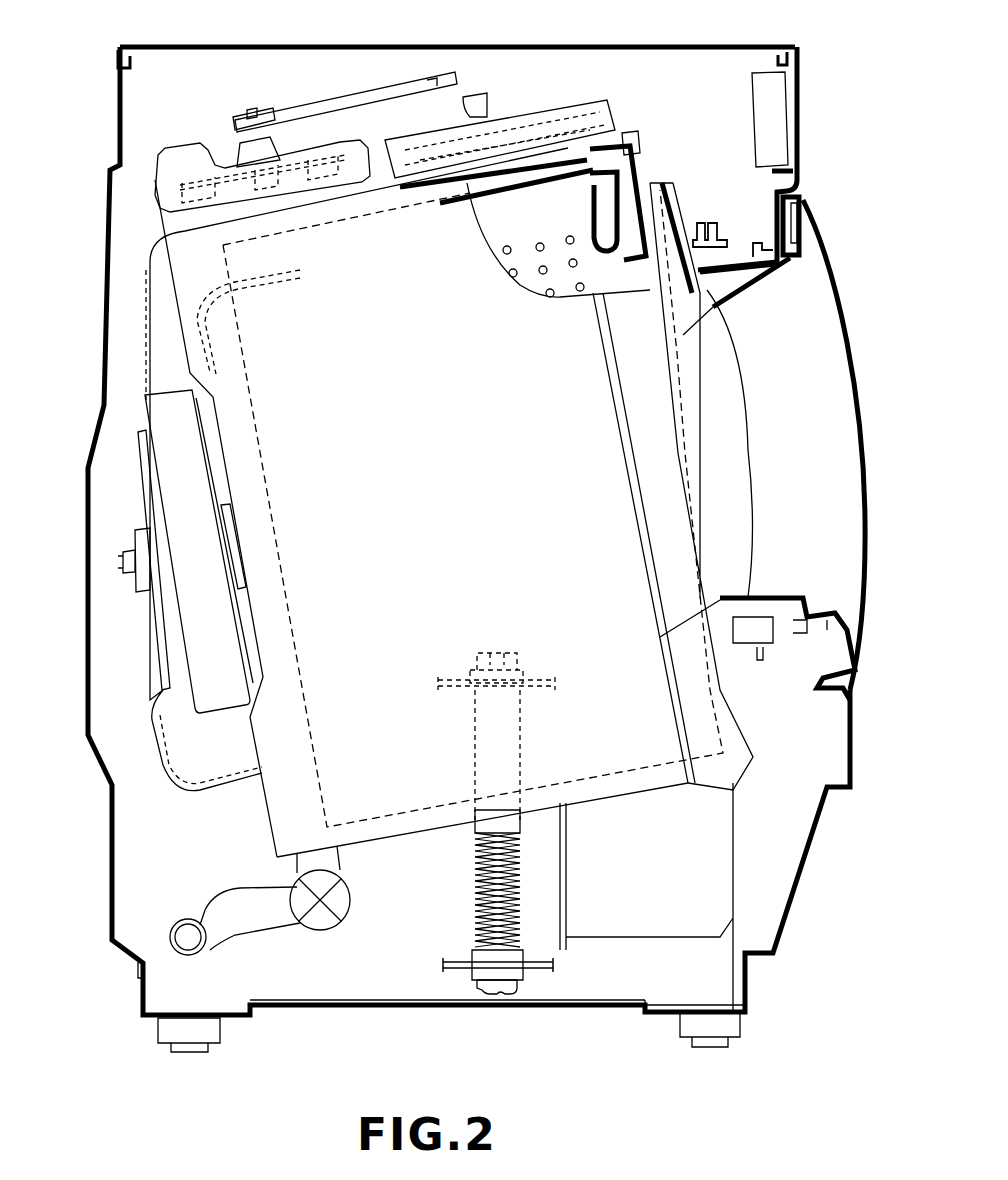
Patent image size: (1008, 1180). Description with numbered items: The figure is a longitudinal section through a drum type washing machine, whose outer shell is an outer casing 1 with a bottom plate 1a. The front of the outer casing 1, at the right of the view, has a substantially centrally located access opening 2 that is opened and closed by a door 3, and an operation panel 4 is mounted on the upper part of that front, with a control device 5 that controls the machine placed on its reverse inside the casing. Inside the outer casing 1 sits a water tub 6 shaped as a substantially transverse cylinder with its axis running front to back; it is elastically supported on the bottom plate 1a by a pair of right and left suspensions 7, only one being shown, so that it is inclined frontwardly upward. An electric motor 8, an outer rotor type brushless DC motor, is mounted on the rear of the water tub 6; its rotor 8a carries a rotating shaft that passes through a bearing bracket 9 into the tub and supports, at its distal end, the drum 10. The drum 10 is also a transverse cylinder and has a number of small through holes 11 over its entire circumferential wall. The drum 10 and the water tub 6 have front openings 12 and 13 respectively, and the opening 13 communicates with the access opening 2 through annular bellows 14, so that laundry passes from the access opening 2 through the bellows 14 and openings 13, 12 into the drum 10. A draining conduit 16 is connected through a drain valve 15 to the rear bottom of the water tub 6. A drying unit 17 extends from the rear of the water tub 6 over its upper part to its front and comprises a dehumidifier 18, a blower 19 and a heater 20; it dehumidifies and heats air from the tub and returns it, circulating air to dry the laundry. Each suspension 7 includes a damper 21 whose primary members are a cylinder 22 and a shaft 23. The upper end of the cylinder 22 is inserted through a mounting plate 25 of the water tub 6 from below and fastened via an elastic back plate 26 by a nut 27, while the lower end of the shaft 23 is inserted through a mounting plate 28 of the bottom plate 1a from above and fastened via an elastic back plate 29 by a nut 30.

The outer casing 1 is at (424, 44).
The bottom plate 1a is at (660, 1018).
The access opening 2 is at (805, 193).
The door 3 is at (850, 376).
The operation panel 4 is at (801, 110).
The control device 5 is at (752, 112).
The water tub 6 is at (553, 150).
The suspension 7 is at (468, 835).
The electric motor 8 is at (133, 522).
The rotor 8a is at (195, 648).
The bearing bracket 9 is at (224, 505).
The drum 10 is at (533, 167).
The small through holes 11 is at (540, 272).
The opening 12 is at (673, 307).
The opening 13 is at (718, 230).
The bellows 14 is at (740, 273).
The drain valve 15 is at (322, 932).
The draining conduit 16 is at (250, 935).
The drying unit 17 is at (140, 243).
The dehumidifier 18 is at (140, 327).
The blower 19 is at (178, 152).
The heater 20 is at (510, 123).
The damper 21 is at (523, 755).
The cylinder 22 is at (503, 725).
The shaft 23 is at (482, 905).
The mounting plate 25 is at (540, 680).
The elastic back plate 26 is at (468, 675).
The nut 27 is at (495, 650).
The mounting plate 28 is at (533, 970).
The elastic back plate 29 is at (470, 970).
The nut 30 is at (497, 995).